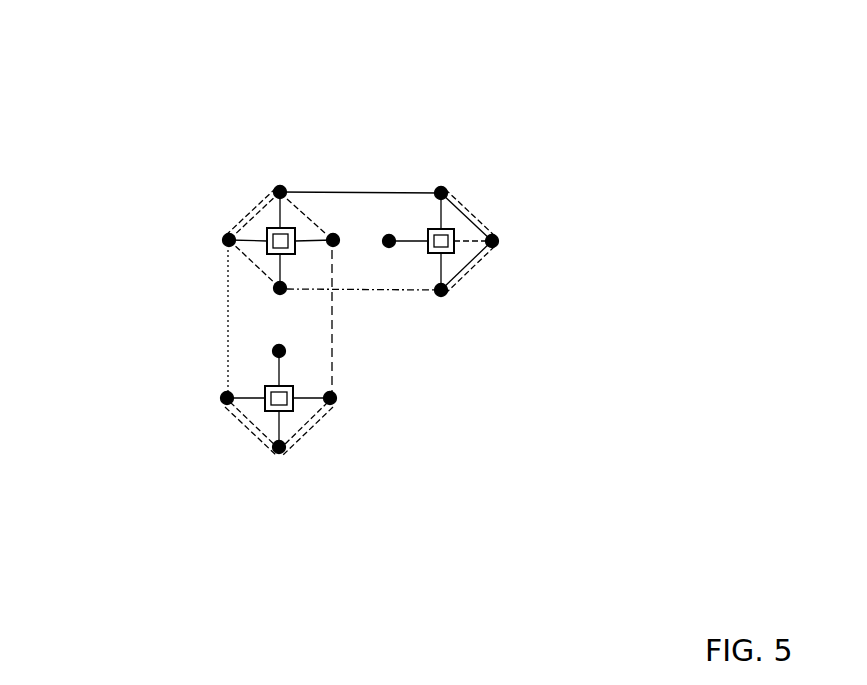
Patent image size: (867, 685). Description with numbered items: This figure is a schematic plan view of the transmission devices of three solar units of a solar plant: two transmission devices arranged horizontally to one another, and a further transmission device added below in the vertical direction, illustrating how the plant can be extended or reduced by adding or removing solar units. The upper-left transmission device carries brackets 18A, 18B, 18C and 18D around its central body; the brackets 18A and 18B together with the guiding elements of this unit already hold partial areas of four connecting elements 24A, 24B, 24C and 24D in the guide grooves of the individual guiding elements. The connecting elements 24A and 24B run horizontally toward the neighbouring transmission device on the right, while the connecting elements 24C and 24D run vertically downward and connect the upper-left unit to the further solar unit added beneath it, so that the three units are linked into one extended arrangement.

The bracket 18A is at (283, 205).
The bracket 18B is at (236, 250).
The bracket 18C is at (272, 280).
The bracket 18D is at (320, 235).
The connecting element 24A is at (367, 187).
The connecting element 24B is at (378, 283).
The connecting element 24C is at (333, 367).
The connecting element 24D is at (226, 357).